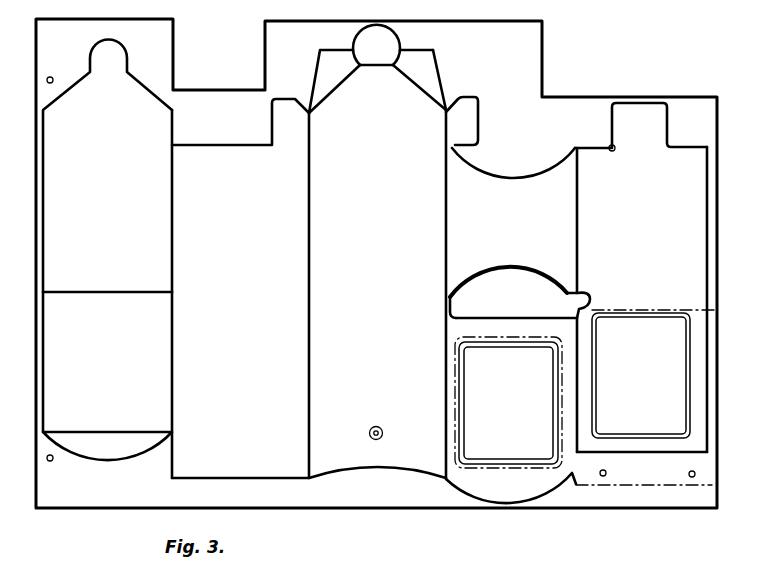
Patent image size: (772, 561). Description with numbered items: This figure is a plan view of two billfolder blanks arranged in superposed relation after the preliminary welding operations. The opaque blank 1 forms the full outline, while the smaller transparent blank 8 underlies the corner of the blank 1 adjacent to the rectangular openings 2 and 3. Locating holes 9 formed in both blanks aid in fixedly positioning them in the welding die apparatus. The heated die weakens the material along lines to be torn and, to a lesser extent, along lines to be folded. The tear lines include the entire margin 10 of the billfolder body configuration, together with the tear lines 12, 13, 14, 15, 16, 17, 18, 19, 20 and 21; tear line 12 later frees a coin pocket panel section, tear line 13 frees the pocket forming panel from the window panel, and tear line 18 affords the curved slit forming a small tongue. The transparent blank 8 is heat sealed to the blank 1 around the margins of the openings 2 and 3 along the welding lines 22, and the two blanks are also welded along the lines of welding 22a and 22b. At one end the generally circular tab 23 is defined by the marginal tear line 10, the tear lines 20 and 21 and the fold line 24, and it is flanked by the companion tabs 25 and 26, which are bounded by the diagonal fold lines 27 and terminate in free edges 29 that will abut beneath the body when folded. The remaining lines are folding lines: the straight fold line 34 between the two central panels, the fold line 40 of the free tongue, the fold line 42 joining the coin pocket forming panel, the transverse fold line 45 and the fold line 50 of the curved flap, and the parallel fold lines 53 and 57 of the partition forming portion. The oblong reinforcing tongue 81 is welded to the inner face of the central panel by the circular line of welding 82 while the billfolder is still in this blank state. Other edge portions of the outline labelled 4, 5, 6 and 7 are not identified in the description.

The opaque blank 1 is at (566, 108).
The rectangular opening 2 is at (686, 418).
The rectangular opening 3 is at (556, 430).
The bottom edge 4 is at (408, 509).
The top edge corner 5 is at (273, 18).
The top notch edge 6 is at (232, 90).
The locking tab 7 is at (672, 98).
The transparent blank 8 is at (690, 310).
The locating holes 9 is at (47, 81).
The marginal tear line 10 is at (447, 82).
The tear line 12 is at (174, 371).
The tear line 13 is at (579, 403).
The tear line 14 is at (585, 309).
The tear line 15 is at (528, 269).
The tear line 16 is at (456, 306).
The tear line 17 is at (511, 318).
The tear line 18 is at (454, 145).
The tear line 19 is at (174, 135).
The tear line 20 is at (352, 50).
The tear line 21 is at (401, 50).
The welding lines 22 is at (556, 368).
The line of welding 22a is at (708, 392).
The line of welding 22b is at (644, 453).
The generally circular tab 23 is at (371, 50).
The fold line 24 is at (388, 66).
The tab 25 is at (328, 73).
The tab 26 is at (426, 69).
The diagonal fold lines 27 is at (334, 100).
The free edges 29 is at (320, 50).
The straight fold line 34 is at (311, 303).
The fold line 40 is at (452, 136).
The fold line 42 is at (174, 229).
The fold line 45 is at (93, 293).
The fold line 50 is at (135, 431).
The fold line 53 is at (445, 226).
The fold line 57 is at (579, 232).
The reinforcing tongue 81 is at (370, 430).
The circular line of welding 82 is at (382, 431).